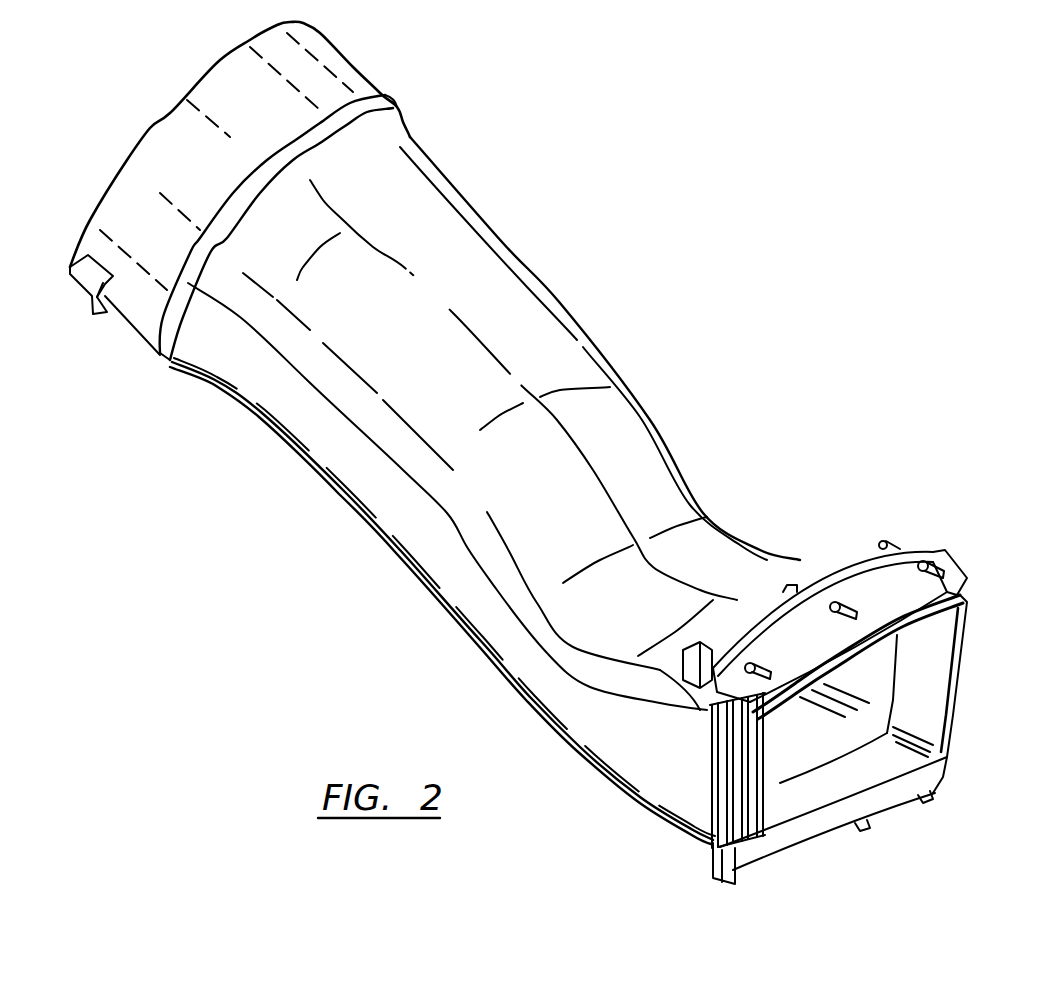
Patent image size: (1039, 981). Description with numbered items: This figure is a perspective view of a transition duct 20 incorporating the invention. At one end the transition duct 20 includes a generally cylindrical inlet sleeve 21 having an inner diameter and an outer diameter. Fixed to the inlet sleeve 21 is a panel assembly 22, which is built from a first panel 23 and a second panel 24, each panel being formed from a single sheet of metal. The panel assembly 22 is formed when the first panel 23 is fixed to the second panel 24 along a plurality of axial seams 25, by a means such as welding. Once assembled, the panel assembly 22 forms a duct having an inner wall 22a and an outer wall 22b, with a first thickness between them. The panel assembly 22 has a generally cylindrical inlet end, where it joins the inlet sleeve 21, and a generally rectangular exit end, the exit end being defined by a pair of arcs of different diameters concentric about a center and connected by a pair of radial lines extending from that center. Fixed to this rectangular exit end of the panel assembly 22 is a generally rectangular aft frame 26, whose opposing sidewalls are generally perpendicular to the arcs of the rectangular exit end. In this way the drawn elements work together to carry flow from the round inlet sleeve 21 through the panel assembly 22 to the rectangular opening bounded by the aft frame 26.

The transition duct 20 is at (592, 270).
The inlet sleeve 21 is at (177, 173).
The panel assembly 22 is at (690, 850).
The inner wall 22a is at (884, 697).
The outer wall 22b is at (662, 767).
The first panel 23 is at (386, 306).
The second panel 24 is at (294, 410).
The axial seams 25 is at (447, 513).
The aft frame 26 is at (940, 677).